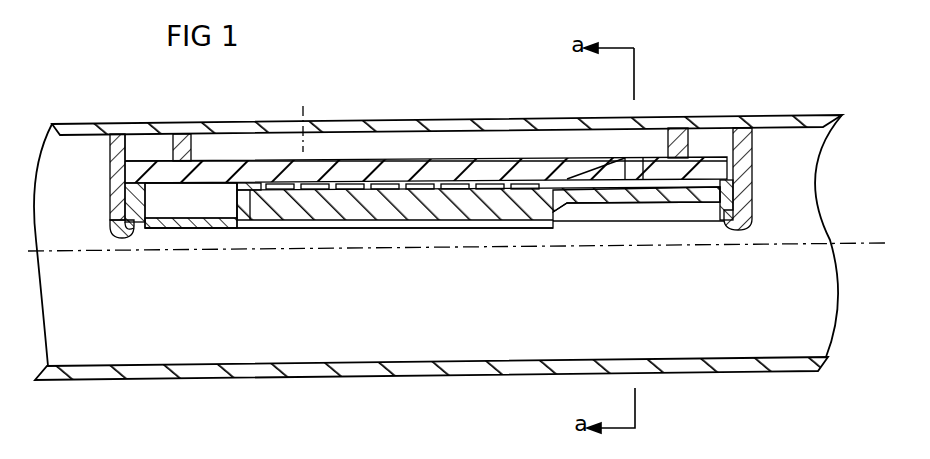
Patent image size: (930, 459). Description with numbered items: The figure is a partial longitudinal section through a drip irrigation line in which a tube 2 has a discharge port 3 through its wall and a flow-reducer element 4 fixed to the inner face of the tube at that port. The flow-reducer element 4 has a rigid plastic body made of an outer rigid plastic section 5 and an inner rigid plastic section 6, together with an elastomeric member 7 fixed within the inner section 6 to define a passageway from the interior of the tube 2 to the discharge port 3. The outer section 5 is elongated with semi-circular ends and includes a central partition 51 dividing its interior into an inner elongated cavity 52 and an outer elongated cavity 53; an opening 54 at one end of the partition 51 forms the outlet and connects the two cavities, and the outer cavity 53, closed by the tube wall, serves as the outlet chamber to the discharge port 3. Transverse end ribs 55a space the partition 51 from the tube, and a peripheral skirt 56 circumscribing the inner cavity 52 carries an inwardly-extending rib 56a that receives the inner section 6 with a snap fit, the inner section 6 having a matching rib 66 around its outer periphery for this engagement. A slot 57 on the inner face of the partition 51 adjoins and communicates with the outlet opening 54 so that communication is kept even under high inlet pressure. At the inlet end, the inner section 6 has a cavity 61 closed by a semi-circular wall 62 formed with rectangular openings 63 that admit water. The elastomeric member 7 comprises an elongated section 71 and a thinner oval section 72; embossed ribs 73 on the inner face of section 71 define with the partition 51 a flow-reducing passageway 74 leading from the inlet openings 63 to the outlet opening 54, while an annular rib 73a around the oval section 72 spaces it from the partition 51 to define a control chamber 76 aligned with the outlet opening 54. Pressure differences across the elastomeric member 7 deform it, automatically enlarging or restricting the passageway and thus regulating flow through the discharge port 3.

The tube 2 is at (700, 372).
The discharge port 3 is at (322, 121).
The flow-reducer element 4 is at (97, 167).
The outer rigid plastic section 5 is at (95, 128).
The inner rigid plastic section 6 is at (136, 161).
The elastomeric member 7 is at (452, 208).
The central partition 51 is at (455, 165).
The inner elongated cavity 52 is at (392, 186).
The outer elongated cavity 53 is at (513, 142).
The opening 54 is at (637, 180).
The transverse end ribs 55a is at (180, 148).
The peripheral skirt 56 is at (120, 194).
The inwardly-extending rib 56a is at (133, 230).
The slot 57 is at (612, 158).
The cavity 61 is at (220, 200).
The semi-circular wall 62 is at (158, 224).
The rectangular openings 63 is at (195, 228).
The rib 66 is at (112, 234).
The elongated section 71 is at (380, 208).
The oval section 72 is at (651, 220).
The ribs 73 is at (277, 215).
The annular rib 73a is at (728, 128).
The flow-reducing passageway 74 is at (303, 214).
The control chamber 76 is at (697, 178).